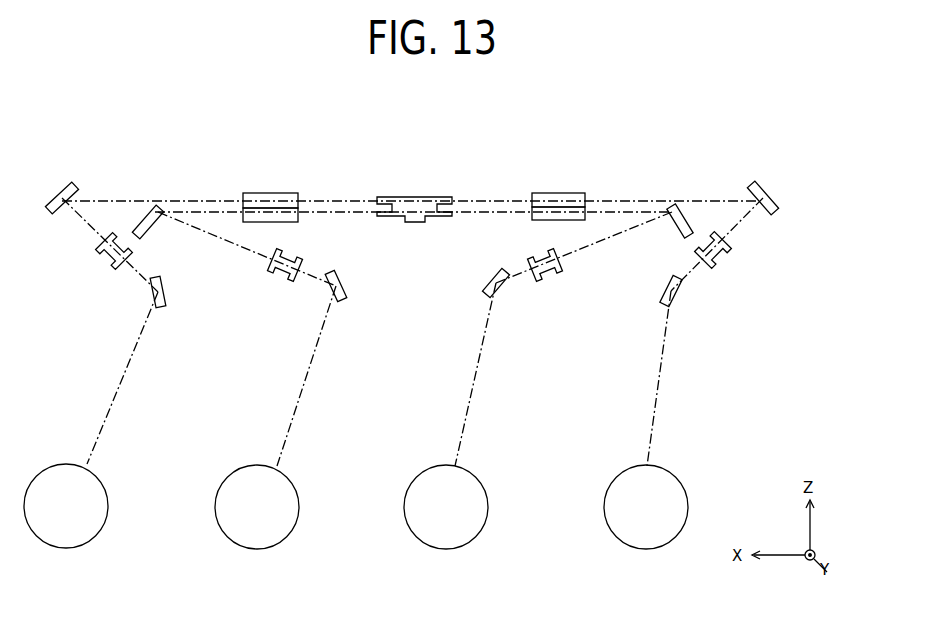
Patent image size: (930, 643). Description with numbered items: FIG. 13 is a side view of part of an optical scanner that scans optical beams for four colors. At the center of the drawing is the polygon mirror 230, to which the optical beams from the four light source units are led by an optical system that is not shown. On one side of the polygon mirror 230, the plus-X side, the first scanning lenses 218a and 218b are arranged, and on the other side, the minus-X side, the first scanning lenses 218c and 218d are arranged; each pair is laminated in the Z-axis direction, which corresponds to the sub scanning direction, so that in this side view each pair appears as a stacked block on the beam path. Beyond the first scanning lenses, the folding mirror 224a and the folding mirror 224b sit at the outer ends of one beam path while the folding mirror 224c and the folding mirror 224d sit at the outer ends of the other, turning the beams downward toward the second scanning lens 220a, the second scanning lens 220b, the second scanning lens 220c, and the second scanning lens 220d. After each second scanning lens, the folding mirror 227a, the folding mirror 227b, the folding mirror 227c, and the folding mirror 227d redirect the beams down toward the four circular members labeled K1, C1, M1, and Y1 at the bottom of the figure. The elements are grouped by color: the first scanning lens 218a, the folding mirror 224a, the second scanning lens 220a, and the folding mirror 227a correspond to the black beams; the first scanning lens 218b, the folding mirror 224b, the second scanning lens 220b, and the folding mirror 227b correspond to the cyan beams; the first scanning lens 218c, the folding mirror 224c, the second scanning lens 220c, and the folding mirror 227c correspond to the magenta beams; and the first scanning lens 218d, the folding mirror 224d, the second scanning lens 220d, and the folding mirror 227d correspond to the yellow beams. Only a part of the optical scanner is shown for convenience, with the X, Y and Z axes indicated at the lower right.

The folding mirror 224a is at (74, 190).
The folding mirror 224b is at (160, 207).
The folding mirror 224c is at (672, 205).
The folding mirror 224d is at (772, 187).
The first scanning lens 218a is at (257, 193).
The first scanning lens 218b is at (289, 220).
The first scanning lens 218c is at (542, 221).
The first scanning lens 218d is at (548, 193).
The polygon mirror 230 is at (417, 197).
The second scanning lens 220a is at (100, 260).
The second scanning lens 220b is at (280, 280).
The second scanning lens 220c is at (548, 282).
The second scanning lens 220d is at (725, 262).
The folding mirror 227a is at (164, 282).
The folding mirror 227b is at (345, 282).
The folding mirror 227c is at (486, 276).
The folding mirror 227d is at (660, 284).
The photosensitive drum (black) K1 is at (108, 497).
The photosensitive drum (cyan) C1 is at (298, 497).
The photosensitive drum (magenta) M1 is at (487, 497).
The photosensitive drum (yellow) Y1 is at (687, 497).